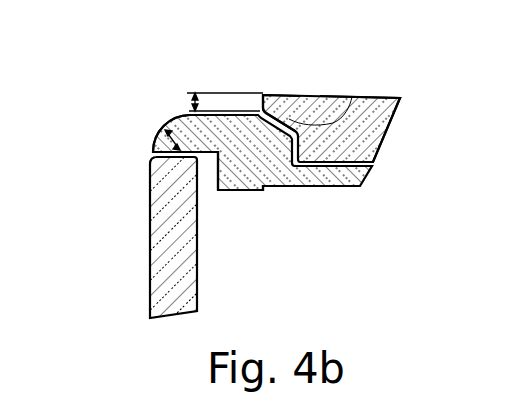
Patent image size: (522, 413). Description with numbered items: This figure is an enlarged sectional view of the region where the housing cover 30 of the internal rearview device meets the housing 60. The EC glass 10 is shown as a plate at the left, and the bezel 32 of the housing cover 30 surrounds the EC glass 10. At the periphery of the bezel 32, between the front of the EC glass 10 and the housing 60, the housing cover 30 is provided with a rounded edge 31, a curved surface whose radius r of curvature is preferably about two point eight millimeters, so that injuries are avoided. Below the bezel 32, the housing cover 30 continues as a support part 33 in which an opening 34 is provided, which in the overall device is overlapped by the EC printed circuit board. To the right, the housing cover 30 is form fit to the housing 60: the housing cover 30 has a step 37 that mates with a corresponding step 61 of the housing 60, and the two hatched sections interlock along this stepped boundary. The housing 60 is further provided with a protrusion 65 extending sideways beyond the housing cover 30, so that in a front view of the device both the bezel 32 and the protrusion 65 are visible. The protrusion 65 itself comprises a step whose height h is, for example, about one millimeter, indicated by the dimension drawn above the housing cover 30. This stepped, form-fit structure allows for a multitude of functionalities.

The EC glass 10 is at (163, 275).
The housing cover 30 is at (333, 188).
The rounded edge 31 is at (150, 149).
The bezel 32 is at (180, 116).
The support part 33 is at (212, 172).
The opening 34 is at (238, 191).
The step 37 is at (289, 119).
The housing 60 is at (377, 130).
The step 61 is at (336, 113).
The protrusion 65 is at (262, 112).
The radius of curvature r is at (160, 138).
The height h is at (219, 100).